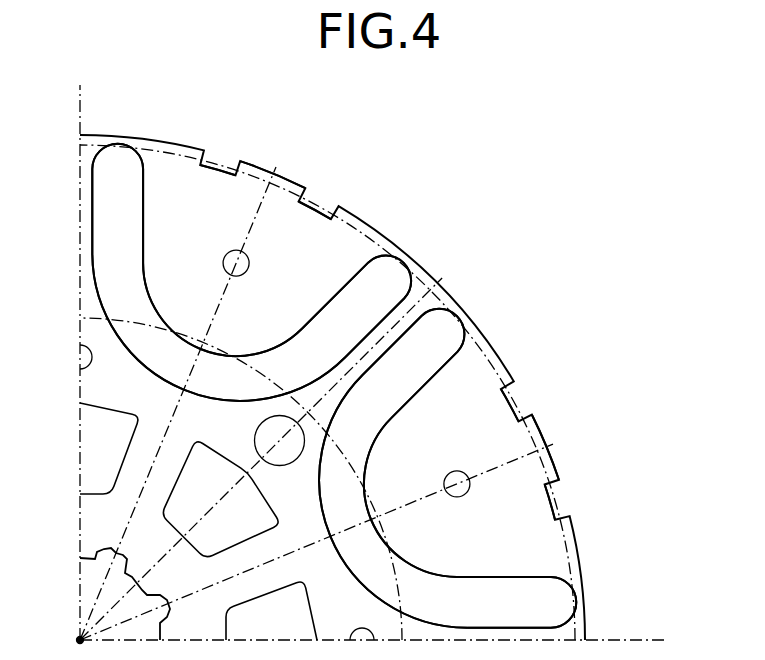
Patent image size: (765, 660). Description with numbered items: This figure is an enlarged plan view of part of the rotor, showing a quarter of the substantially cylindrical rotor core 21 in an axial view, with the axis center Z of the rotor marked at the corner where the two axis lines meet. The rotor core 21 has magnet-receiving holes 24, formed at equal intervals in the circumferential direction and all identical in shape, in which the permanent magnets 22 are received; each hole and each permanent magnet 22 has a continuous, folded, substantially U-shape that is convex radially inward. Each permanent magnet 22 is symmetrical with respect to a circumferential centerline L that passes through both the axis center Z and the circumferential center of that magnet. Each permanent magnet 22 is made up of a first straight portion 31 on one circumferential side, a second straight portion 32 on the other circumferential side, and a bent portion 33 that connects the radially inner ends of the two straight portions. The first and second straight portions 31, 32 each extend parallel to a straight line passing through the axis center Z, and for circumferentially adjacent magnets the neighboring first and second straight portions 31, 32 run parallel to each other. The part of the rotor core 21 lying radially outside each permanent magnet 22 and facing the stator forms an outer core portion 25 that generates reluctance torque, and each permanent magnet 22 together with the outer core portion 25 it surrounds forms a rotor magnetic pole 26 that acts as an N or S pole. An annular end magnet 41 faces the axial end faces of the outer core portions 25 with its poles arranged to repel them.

The rotor core 21 is at (455, 286).
The permanent magnet 22 is at (353, 293).
The magnet-receiving hole 24 is at (313, 340).
The outer core portion 25 is at (211, 192).
The rotor magnetic pole 26 is at (292, 172).
The first straight portion 31 is at (132, 187).
The second straight portion 32 is at (378, 297).
The bent portion 33 is at (152, 353).
The annular end magnet 41 is at (505, 362).
The circumferential centerline L is at (268, 158).
The axis center Z is at (77, 639).